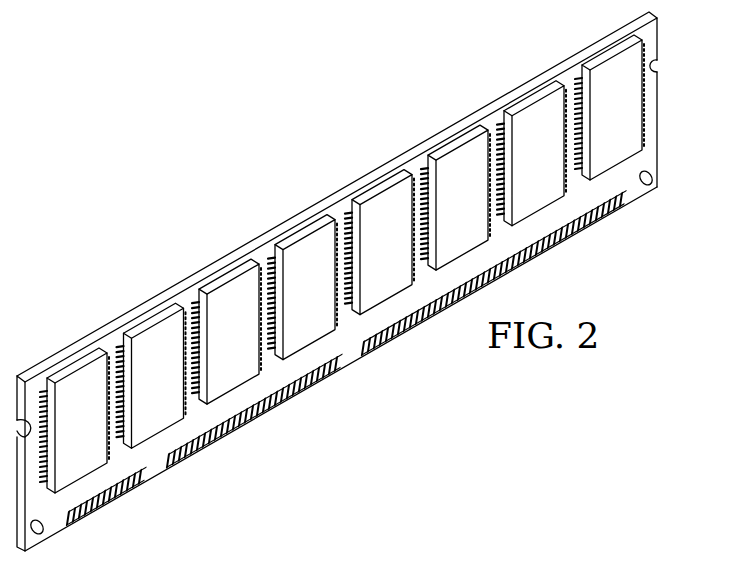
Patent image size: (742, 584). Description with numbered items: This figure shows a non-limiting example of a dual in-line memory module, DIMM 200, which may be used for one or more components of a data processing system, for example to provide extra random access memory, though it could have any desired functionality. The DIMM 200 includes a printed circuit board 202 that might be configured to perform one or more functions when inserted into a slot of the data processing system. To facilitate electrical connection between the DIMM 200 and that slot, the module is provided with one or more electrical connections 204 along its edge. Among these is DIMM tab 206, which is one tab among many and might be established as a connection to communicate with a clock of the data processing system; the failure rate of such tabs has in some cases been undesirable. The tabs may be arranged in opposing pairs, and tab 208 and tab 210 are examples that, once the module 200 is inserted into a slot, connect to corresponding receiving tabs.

The dual in-line memory module (DIMM) 200 is at (305, 166).
The printed circuit board 202 is at (658, 128).
The electrical connections 204 is at (251, 430).
The DIMM tab 206 is at (121, 504).
The tab 208 is at (337, 370).
The tab 210 is at (335, 372).